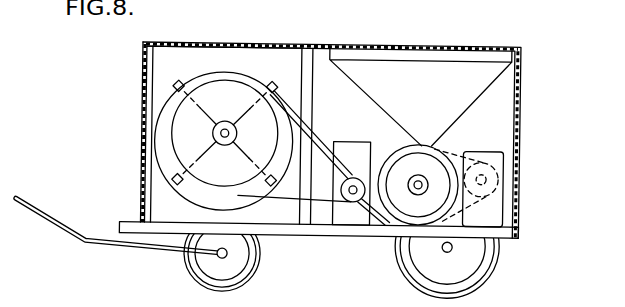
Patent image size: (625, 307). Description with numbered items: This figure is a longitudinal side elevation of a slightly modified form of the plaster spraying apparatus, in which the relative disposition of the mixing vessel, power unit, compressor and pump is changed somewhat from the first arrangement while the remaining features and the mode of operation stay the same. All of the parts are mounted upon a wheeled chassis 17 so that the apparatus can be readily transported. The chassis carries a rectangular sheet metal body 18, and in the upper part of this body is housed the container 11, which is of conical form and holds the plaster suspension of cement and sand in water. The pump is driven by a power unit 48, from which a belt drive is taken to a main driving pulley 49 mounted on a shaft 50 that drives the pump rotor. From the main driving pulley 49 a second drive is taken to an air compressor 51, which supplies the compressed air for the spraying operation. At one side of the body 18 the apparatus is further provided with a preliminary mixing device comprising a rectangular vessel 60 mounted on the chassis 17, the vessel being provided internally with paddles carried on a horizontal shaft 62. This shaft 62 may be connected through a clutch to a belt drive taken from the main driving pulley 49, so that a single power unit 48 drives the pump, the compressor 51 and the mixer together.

The container 11 is at (462, 92).
The wheeled chassis 17 is at (294, 228).
The rectangular sheet metal body 18 is at (523, 117).
The power unit 48 is at (348, 139).
The main driving pulley 49 is at (407, 198).
The shaft 50 is at (419, 174).
The air compressor 51 is at (495, 207).
The rectangular vessel 60 is at (193, 57).
The horizontal shaft 62 is at (221, 121).